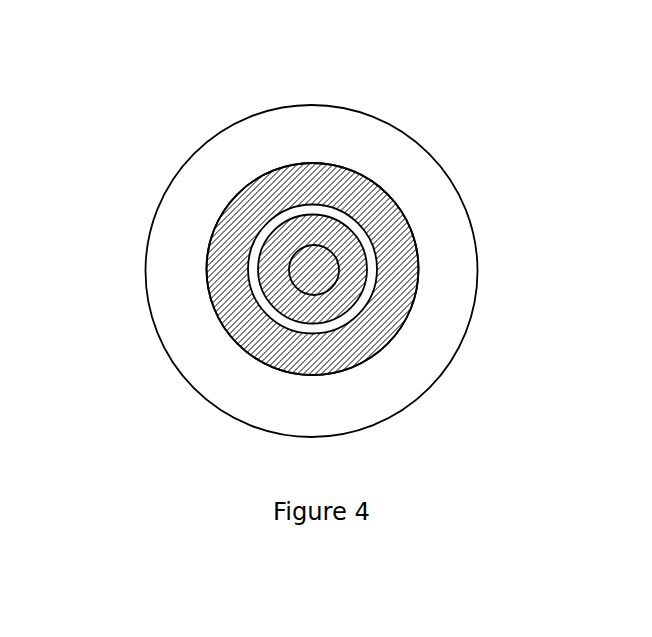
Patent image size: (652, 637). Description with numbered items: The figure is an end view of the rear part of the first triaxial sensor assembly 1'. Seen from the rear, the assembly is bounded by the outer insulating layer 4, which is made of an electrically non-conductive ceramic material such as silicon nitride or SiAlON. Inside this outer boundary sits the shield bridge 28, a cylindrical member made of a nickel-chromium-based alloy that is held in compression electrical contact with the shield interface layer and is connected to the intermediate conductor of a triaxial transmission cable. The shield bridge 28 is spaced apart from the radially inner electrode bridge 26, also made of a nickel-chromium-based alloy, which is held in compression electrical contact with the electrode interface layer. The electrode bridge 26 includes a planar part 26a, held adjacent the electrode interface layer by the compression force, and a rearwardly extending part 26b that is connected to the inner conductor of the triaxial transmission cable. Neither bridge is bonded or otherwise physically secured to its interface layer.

The outer insulating layer 4 is at (452, 252).
The triaxial sensor assembly 1' is at (87, 157).
The electrode bridge 26 is at (283, 245).
The planar part 26a is at (358, 229).
The rearwardly extending part 26b is at (313, 262).
The shield bridge 28 is at (245, 315).